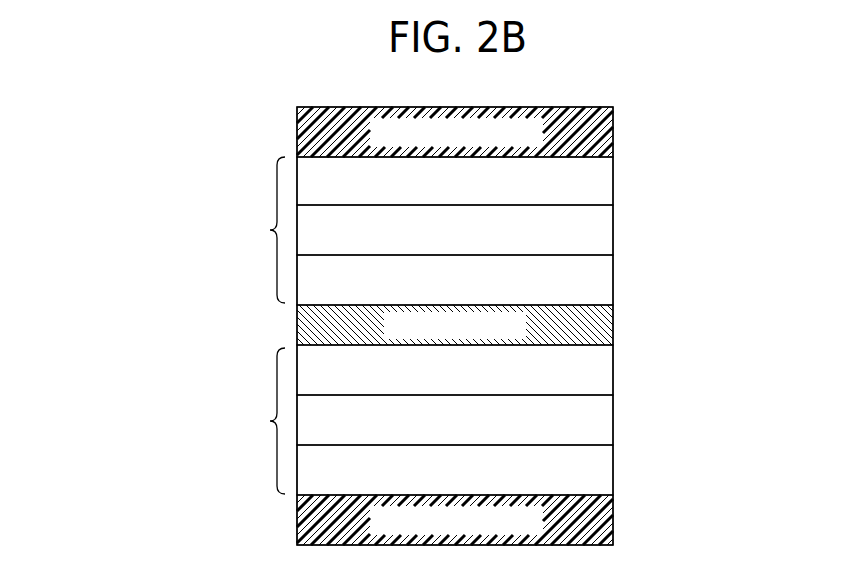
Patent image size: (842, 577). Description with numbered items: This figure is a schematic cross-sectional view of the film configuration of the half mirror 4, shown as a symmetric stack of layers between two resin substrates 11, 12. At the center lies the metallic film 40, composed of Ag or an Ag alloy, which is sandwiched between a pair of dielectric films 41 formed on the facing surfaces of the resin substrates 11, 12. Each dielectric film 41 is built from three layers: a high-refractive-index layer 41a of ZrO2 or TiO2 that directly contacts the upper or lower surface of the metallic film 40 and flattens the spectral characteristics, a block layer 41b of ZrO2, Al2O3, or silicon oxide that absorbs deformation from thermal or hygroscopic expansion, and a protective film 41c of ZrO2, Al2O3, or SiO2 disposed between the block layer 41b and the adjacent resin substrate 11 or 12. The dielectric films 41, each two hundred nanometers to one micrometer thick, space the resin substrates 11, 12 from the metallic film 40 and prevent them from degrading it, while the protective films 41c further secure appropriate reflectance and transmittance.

The half mirror 4 is at (104, 186).
The resin substrate 11 is at (604, 128).
The resin substrate 12 is at (604, 517).
The metallic film 40 is at (604, 327).
The dielectric film 41 is at (712, 168).
The high-refractive-index layer 41a is at (604, 282).
The block layer 41b is at (604, 232).
The protective film 41c is at (604, 182).